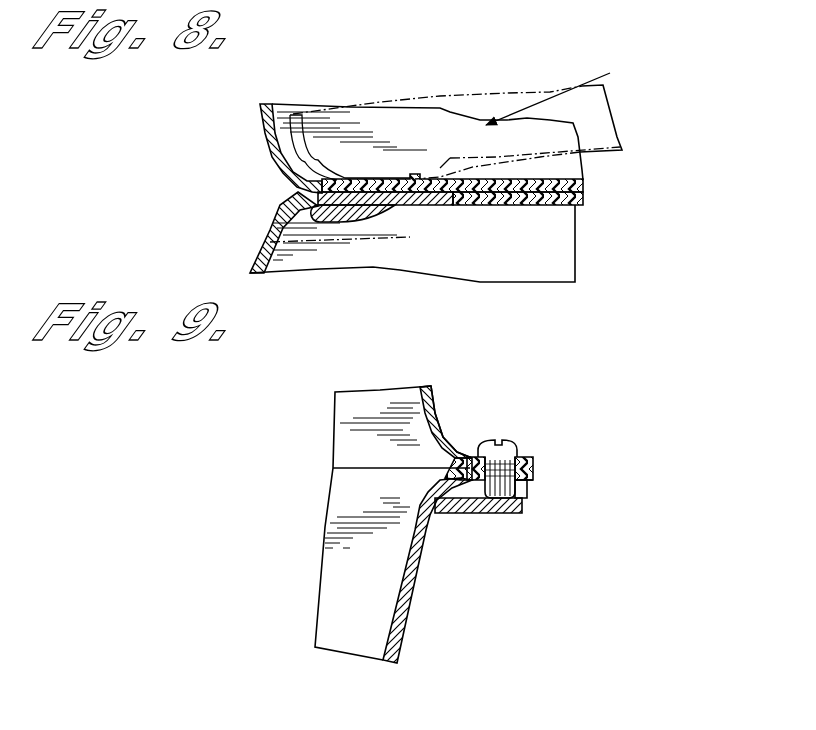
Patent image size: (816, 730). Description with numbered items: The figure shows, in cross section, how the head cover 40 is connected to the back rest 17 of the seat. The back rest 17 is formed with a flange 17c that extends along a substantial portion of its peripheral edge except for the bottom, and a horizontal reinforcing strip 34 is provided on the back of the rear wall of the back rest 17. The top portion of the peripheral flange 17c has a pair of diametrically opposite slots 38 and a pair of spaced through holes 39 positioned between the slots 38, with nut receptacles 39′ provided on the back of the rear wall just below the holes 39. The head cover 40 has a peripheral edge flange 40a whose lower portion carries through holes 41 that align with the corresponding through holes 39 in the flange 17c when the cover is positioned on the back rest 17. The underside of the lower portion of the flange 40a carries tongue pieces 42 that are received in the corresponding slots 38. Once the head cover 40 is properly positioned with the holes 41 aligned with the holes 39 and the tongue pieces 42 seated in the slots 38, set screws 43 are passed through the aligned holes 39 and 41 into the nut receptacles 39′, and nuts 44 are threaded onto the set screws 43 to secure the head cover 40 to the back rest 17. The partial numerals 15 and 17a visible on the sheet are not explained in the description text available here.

In FIG. 8, the tank (partial, adjacent sheet) 15 is at (274, 8).
In FIG. 8, the reinforcing strip 34 is at (420, 115).
In FIG. 8, the back rest 17 is at (557, 206).
In FIG. 9, the back rest 17 is at (400, 634).
In FIG. 8, the tank lower wall portion 17a is at (275, 271).
In FIG. 9, the tank lower wall portion 17a is at (326, 599).
In FIG. 8, the slots 38 is at (432, 205).
In FIG. 8, the tongue pieces 42 is at (324, 216).
In FIG. 9, the through holes 39 is at (522, 490).
In FIG. 9, the nut receptacles 39′ is at (455, 500).
In FIG. 9, the head cover 40 is at (438, 413).
In FIG. 9, the peripheral edge flange 40a is at (533, 467).
In FIG. 9, the through holes 41 is at (533, 457).
In FIG. 9, the set screws 43 is at (508, 443).
In FIG. 9, the nuts 44 is at (502, 500).
In FIG. 9, the flange 17c is at (533, 480).